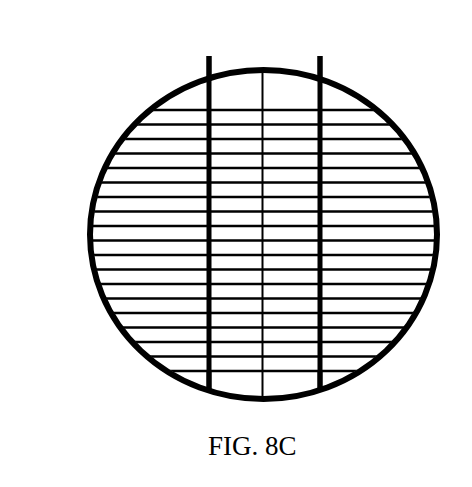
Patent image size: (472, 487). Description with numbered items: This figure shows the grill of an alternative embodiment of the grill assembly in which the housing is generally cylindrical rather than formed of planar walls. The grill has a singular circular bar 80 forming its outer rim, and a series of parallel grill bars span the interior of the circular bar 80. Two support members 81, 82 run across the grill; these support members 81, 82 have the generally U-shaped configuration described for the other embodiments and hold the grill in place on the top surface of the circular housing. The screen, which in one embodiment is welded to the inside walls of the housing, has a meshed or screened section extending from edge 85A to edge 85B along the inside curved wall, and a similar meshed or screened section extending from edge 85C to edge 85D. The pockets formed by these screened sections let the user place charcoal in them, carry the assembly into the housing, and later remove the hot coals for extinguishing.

The circular bar 80 is at (93, 293).
The support member 81 is at (204, 77).
The support member 82 is at (330, 78).
The edge of screen 85A is at (203, 391).
The edge of screen 85B is at (207, 74).
The edge of screen 85C is at (323, 393).
The edge of screen 85D is at (325, 75).